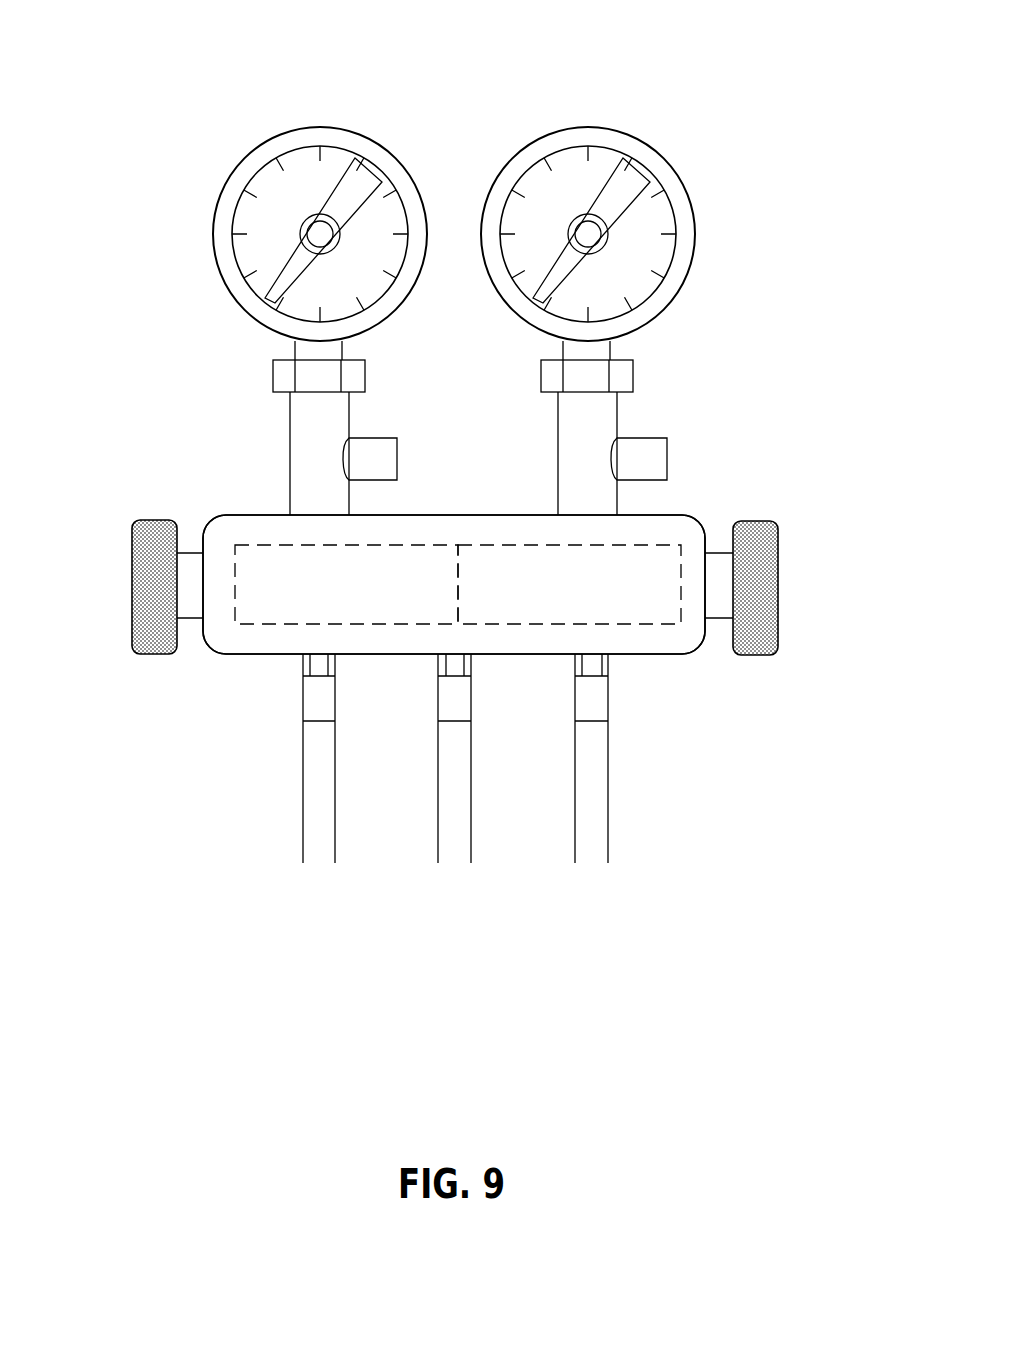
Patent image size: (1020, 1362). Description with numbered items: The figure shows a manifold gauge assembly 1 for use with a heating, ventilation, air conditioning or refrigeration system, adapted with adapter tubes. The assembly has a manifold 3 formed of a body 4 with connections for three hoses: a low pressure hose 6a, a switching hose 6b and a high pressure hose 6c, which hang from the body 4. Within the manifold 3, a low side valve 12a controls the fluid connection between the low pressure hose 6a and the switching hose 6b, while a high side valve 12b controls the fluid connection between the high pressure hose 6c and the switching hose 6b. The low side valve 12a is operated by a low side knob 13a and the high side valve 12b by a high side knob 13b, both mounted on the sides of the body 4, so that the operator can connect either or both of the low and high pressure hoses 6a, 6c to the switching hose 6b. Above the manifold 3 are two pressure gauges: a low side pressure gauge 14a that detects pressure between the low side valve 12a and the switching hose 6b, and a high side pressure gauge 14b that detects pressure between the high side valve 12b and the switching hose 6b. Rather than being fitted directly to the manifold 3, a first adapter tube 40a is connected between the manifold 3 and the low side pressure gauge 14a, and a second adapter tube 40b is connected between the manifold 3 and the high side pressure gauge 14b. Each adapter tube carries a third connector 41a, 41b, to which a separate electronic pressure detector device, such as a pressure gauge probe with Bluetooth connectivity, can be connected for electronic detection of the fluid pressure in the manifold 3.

The manifold gauge assembly 1 is at (170, 131).
The low side pressure gauge 14a is at (327, 135).
The high side pressure gauge 14b is at (578, 138).
The first adapter tube 40a is at (190, 430).
The second adapter tube 40b is at (760, 427).
The third connector 41a is at (397, 459).
The third connector 41b is at (667, 465).
The manifold 3 is at (627, 638).
The body 4 is at (454, 584).
The low side valve 12a is at (250, 613).
The high side valve 12b is at (637, 592).
The low side knob 13a is at (147, 580).
The high side knob 13b is at (758, 595).
The low pressure hose 6a is at (318, 850).
The switching hose 6b is at (458, 850).
The high pressure hose 6c is at (590, 850).